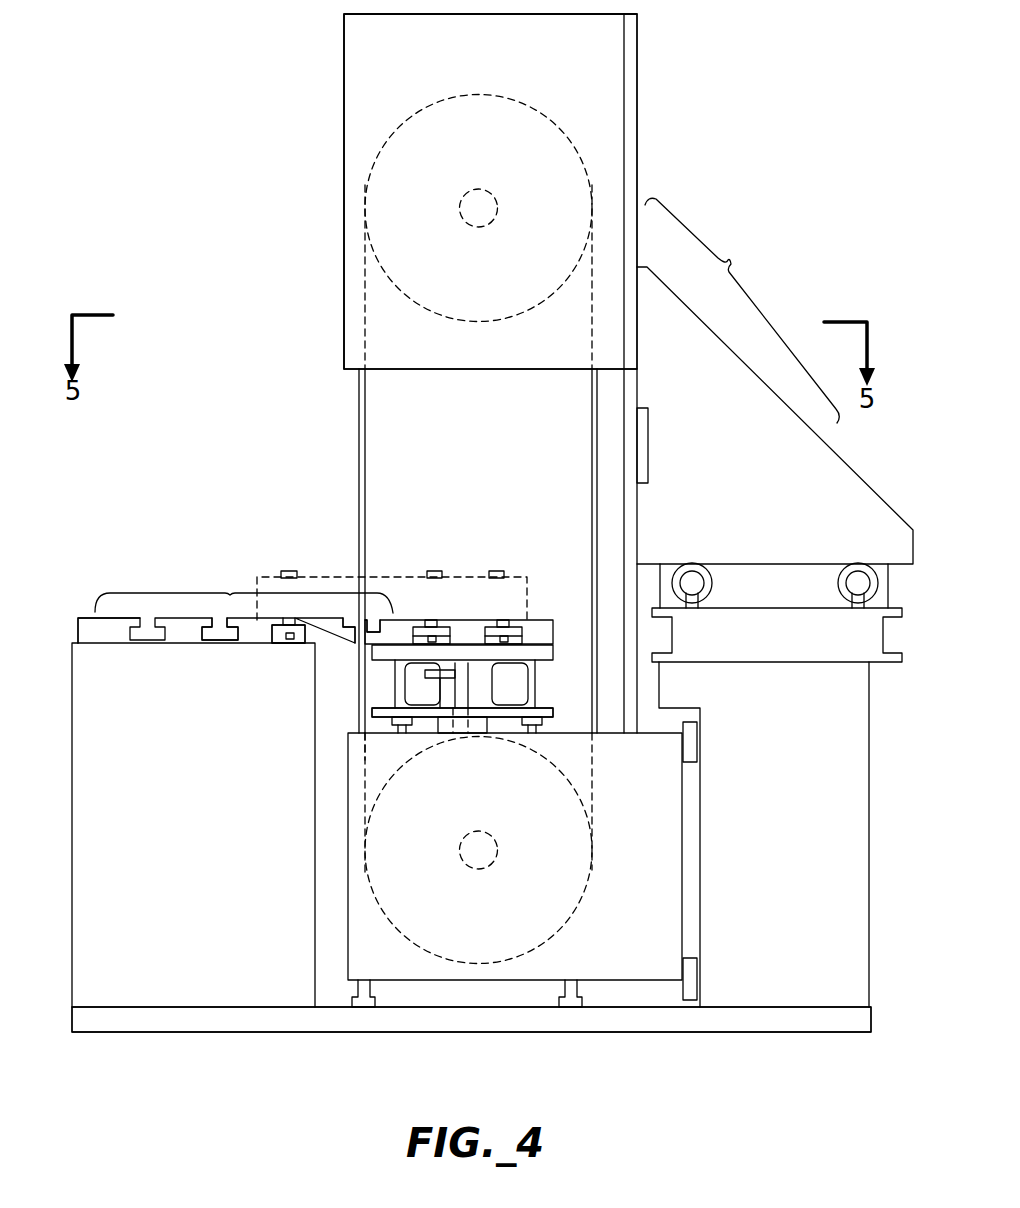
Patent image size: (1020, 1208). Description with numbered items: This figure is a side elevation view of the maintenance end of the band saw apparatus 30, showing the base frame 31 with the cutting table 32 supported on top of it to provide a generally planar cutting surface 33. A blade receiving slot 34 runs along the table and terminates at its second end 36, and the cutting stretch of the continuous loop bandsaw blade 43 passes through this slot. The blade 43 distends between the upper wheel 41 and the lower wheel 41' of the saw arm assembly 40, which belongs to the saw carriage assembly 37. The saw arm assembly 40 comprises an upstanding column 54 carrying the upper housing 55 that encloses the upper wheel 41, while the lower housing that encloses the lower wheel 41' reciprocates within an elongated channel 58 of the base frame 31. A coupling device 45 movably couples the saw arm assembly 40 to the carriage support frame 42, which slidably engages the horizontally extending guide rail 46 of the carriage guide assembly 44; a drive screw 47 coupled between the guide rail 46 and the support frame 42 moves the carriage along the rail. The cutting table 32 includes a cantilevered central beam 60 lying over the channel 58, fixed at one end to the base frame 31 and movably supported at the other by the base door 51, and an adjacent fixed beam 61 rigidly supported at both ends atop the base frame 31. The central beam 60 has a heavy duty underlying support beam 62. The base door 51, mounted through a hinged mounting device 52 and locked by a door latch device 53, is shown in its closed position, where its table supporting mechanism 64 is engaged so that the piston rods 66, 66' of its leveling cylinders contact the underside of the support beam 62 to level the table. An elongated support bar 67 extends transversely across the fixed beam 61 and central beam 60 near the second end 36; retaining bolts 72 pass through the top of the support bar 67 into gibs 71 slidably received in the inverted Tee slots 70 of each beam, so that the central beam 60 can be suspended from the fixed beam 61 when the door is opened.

The band saw apparatus 30 is at (207, 188).
The base frame 31 is at (72, 995).
The cutting table 32 is at (70, 622).
The cutting surface 33 is at (228, 593).
The blade receiving slot 34 is at (357, 622).
The second end 36 is at (193, 638).
The saw carriage assembly 37 is at (730, 262).
The saw arm assembly 40 is at (341, 135).
The upper wheel 41 is at (420, 232).
The lower wheel 41' is at (414, 848).
The carriage support frame 42 is at (857, 472).
The bandsaw blade 43 is at (360, 415).
The carriage guide assembly 44 is at (895, 635).
The coupling device 45 is at (648, 428).
The guide rail 46 is at (887, 663).
The drive screw 47 is at (692, 565).
The base door 51 is at (350, 850).
The hinged mounting device 52 is at (697, 740).
The door latch device 53 is at (488, 723).
The upstanding column 54 is at (624, 465).
The upper housing 55 is at (344, 80).
The elongated channel 58 is at (322, 962).
The cantilevered central beam 60 is at (555, 638).
The fixed beam 61 is at (83, 640).
The support beam 62 is at (373, 698).
The table supporting mechanism 64 is at (393, 752).
The piston rod 66 is at (397, 736).
The piston rod 66' is at (550, 708).
The support bar 67 is at (378, 572).
The inverted Tee slot 70 is at (280, 644).
The gib 71 is at (300, 645).
The retaining bolt 72 is at (289, 570).